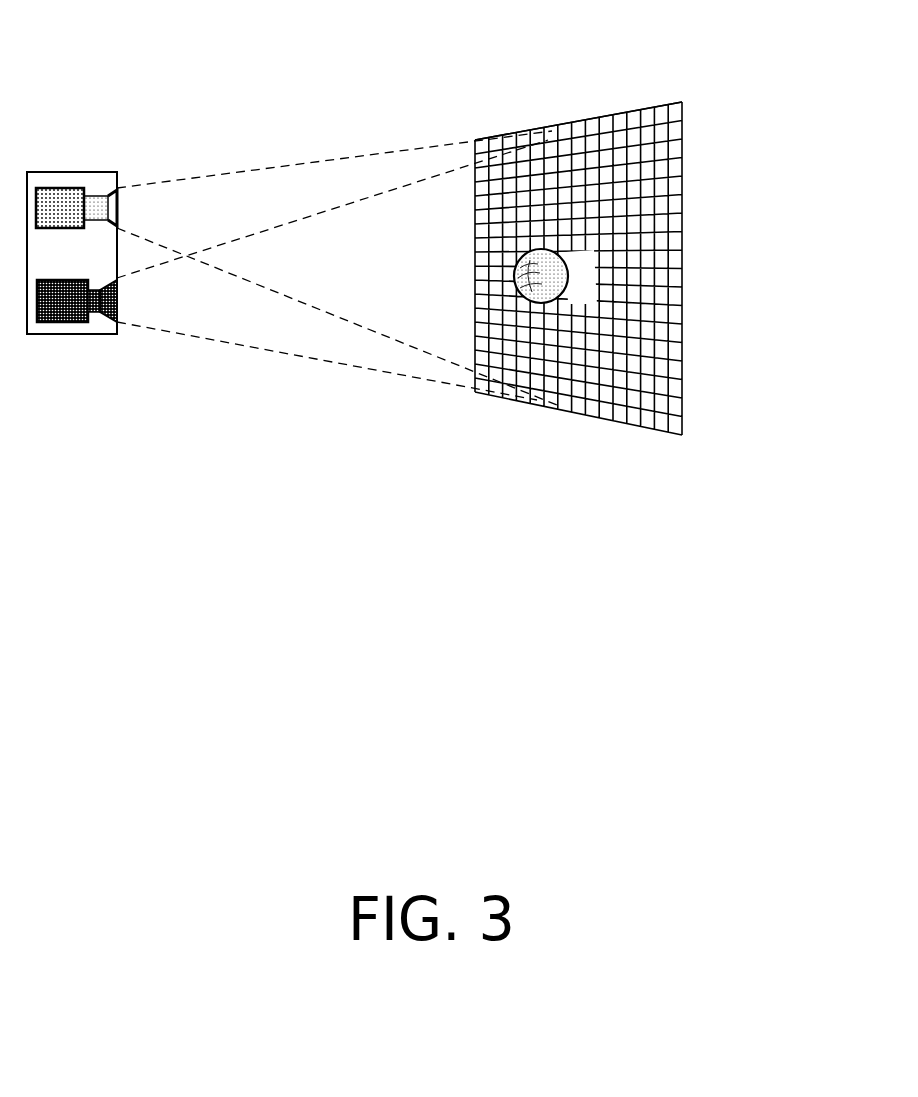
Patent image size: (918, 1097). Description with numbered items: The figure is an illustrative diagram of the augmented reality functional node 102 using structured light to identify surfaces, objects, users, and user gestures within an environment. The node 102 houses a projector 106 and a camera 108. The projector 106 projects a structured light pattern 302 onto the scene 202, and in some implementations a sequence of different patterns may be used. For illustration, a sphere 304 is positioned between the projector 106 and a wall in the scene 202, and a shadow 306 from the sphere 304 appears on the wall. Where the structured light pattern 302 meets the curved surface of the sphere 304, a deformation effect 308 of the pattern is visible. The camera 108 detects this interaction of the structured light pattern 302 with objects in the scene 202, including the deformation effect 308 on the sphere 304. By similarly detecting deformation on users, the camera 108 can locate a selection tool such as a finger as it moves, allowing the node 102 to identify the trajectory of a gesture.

The augmented reality functional node 102 is at (55, 334).
The projector 106 is at (60, 206).
The camera 108 is at (80, 318).
The scene 202 is at (697, 435).
The structured light pattern 302 is at (477, 160).
The sphere 304 is at (539, 247).
The shadow 306 is at (586, 256).
The deformation effect 308 is at (522, 292).